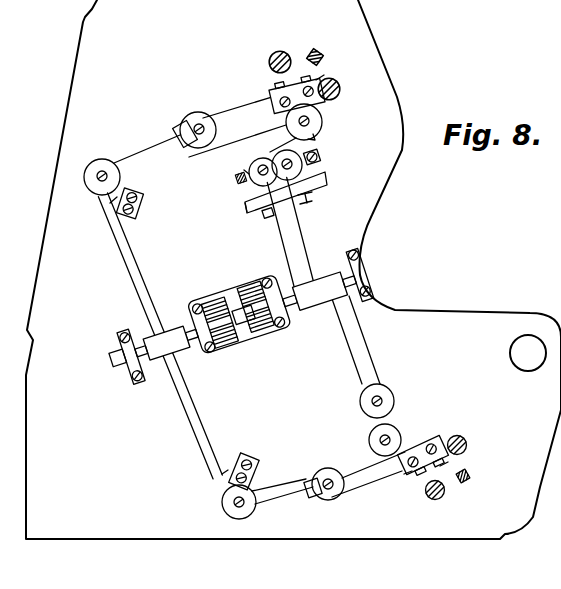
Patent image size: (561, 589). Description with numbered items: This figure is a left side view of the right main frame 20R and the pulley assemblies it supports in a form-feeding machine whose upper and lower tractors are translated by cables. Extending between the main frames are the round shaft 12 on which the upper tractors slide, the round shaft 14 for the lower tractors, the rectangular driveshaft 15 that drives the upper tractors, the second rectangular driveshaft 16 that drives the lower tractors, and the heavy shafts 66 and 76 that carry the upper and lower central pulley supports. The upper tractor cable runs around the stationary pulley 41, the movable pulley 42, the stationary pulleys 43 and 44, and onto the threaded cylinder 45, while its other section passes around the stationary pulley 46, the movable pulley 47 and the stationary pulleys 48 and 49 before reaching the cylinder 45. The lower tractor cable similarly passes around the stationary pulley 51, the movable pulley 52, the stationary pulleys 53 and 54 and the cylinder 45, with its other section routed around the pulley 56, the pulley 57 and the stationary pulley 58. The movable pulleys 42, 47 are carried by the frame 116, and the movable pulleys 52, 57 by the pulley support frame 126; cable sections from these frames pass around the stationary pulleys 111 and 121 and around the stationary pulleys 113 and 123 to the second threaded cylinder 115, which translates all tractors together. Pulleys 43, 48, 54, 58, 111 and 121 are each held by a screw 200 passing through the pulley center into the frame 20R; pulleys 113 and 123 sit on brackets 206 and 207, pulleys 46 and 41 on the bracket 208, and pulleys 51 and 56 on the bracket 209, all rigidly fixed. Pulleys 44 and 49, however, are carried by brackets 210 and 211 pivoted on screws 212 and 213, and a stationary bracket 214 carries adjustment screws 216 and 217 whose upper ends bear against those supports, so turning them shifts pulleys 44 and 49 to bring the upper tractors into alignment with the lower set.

The round shaft 12 is at (341, 87).
The round shaft 14 is at (468, 447).
The rectangular driveshaft 15 is at (323, 50).
The second rectangular driveshaft 16 is at (472, 479).
The right main frame 20R is at (459, 318).
The stationary pulley 41 is at (320, 78).
The movable pulley 42 is at (190, 157).
The stationary pulley 43 is at (310, 142).
The stationary pulley 44 is at (329, 179).
The threaded cylinder 45 is at (320, 298).
The stationary pulley 46 is at (272, 94).
The movable pulley 47 is at (198, 115).
The stationary pulley 48 is at (322, 118).
The stationary pulley 49 is at (263, 158).
The stationary pulley 51 is at (445, 462).
The movable pulley 52 is at (338, 500).
The stationary pulley 53 is at (368, 474).
The stationary pulley 54 is at (394, 398).
The pulley 56 is at (407, 478).
The pulley 57 is at (329, 468).
The stationary pulley 58 is at (398, 432).
The heavy shaft 66 is at (280, 50).
The heavy shaft 76 is at (437, 500).
The stationary pulley 111 is at (103, 160).
The stationary pulley 113 is at (118, 212).
The second threaded cylinder 115 is at (170, 352).
The frame 116 is at (180, 132).
The stationary pulley 121 is at (220, 503).
The stationary pulley 123 is at (226, 479).
The pulley support frame 126 is at (309, 485).
The screw 200 is at (96, 185).
The bracket 206 is at (142, 205).
The bracket 207 is at (256, 455).
The bracket 208 is at (253, 120).
The bracket 209 is at (433, 443).
The bracket 210 is at (320, 157).
The bracket 211 is at (243, 172).
The screw 212 is at (328, 164).
The screw 213 is at (236, 179).
The stationary bracket 214 is at (245, 204).
The adjustment screw 216 is at (308, 200).
The adjustment screw 217 is at (266, 214).